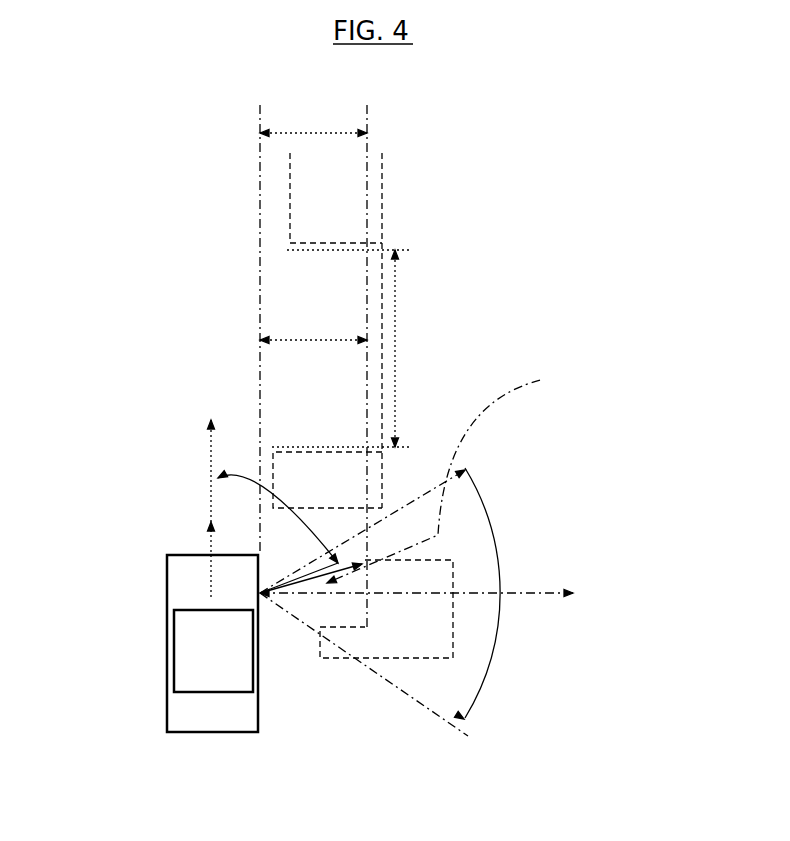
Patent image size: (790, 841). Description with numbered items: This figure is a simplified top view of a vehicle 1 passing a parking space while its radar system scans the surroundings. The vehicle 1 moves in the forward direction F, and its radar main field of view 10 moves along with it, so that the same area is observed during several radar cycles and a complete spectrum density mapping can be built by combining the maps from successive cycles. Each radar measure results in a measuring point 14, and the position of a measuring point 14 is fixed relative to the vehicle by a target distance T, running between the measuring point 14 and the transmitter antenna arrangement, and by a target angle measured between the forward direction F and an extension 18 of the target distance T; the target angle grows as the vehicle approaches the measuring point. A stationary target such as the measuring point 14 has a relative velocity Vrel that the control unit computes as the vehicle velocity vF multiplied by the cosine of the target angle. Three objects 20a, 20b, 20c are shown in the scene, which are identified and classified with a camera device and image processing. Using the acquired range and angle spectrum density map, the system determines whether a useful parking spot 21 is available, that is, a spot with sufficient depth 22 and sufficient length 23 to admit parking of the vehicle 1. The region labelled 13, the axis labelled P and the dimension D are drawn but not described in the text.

The vehicle 1 is at (210, 643).
The main field of view 10 is at (498, 632).
The environment region 13 is at (437, 145).
The measuring point 14 is at (363, 565).
The extension of the target distance 18 is at (447, 477).
The object 20a is at (288, 193).
The object 20b is at (313, 450).
The object 20c is at (333, 658).
The parking spot 21 is at (298, 288).
The depth 22 is at (313, 329).
The length 23 is at (397, 296).
The lane width D is at (313, 121).
The forward direction F is at (208, 455).
The target distance T is at (298, 581).
The reference axis P is at (543, 593).
The vehicle velocity vF is at (206, 560).
The relative velocity Vrel is at (350, 567).